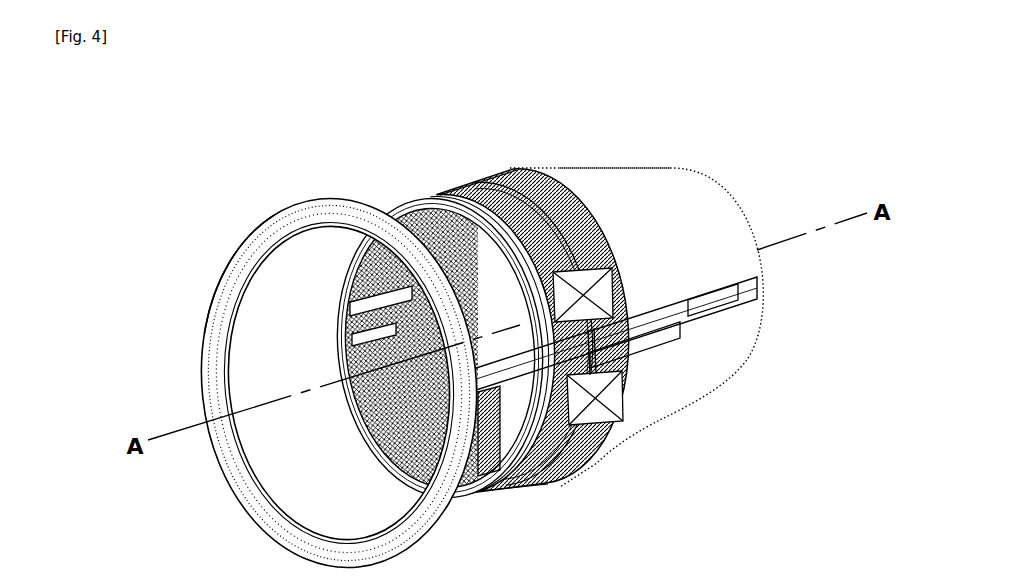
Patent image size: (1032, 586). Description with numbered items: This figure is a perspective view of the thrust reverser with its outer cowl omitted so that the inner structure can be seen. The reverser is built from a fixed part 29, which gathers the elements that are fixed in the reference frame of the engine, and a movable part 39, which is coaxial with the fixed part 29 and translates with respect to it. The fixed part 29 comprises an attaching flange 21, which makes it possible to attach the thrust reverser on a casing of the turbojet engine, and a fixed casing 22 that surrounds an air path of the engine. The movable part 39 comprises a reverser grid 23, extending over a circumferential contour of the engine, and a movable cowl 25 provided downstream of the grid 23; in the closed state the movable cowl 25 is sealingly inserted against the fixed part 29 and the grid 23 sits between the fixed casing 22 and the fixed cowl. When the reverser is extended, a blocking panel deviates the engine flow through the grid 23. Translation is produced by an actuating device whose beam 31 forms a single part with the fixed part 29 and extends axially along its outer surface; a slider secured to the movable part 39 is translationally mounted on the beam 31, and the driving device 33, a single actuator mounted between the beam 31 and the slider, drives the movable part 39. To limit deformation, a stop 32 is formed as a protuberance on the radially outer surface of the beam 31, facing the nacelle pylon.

The attaching flange 21 is at (307, 217).
The fixed casing 22 is at (427, 233).
The reverser grid 23 is at (482, 172).
The movable cowl 25 is at (695, 203).
The fixed part 29 is at (250, 186).
The beam 31 is at (566, 215).
The stop 32 is at (667, 352).
The driving device 33 is at (622, 385).
The movable part 39 is at (646, 142).